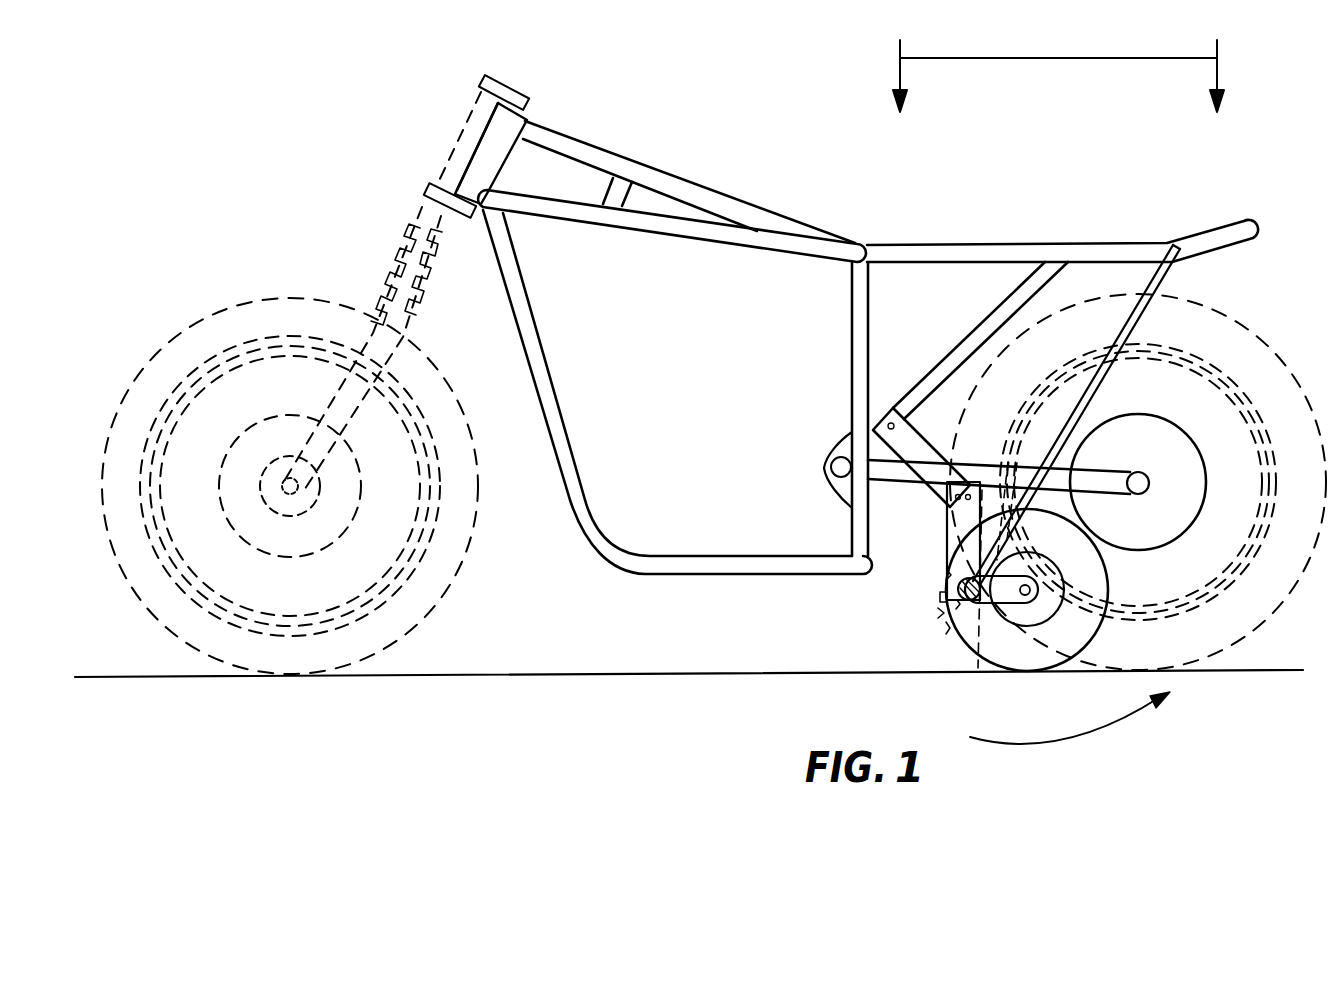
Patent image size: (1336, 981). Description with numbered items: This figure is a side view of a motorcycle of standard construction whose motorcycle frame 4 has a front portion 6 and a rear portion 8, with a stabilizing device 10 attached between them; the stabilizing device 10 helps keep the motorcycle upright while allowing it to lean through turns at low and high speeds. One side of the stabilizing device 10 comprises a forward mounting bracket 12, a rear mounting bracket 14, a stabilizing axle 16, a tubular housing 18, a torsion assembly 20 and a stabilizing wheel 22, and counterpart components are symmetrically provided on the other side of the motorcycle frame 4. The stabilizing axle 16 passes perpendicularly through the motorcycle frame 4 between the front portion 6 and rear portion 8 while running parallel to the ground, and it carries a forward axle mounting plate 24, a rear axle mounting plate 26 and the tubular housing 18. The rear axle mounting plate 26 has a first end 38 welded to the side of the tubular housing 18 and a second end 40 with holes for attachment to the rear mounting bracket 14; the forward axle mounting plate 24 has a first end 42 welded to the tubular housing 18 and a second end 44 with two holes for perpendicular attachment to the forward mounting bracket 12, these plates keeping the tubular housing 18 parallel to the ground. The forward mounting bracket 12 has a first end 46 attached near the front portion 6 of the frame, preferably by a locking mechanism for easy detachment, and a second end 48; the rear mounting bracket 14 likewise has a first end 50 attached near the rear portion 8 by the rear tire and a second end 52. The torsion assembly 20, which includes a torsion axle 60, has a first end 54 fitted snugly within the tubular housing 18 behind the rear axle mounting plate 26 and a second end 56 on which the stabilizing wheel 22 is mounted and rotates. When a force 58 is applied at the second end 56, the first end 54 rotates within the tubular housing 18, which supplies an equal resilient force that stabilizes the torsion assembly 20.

The motorcycle frame 4 is at (863, 243).
The front portion 6 is at (605, 147).
The rear portion 8 is at (1200, 232).
The stabilizing device 10 is at (1061, 91).
The forward mounting bracket 12 is at (920, 425).
The rear mounting bracket 14 is at (1150, 307).
The stabilizing axle 16 is at (940, 596).
The tubular housing 18 is at (938, 612).
The torsion assembly 20 is at (1010, 602).
The stabilizing wheel 22 is at (1075, 655).
The forward axle mounting plate 24 is at (945, 532).
The rear axle mounting plate 26 is at (1064, 574).
The first end 38 is at (957, 602).
The second end 40 is at (1002, 551).
The first end 42 is at (945, 570).
The second end 44 is at (943, 627).
The first end 46 is at (943, 452).
The second end 48 is at (890, 422).
The first end 50 is at (1076, 512).
The second end 52 is at (1167, 272).
The first end 54 is at (980, 612).
The second end 56 is at (1030, 604).
The force 58 is at (1070, 732).
The torsion axle 60 is at (943, 580).